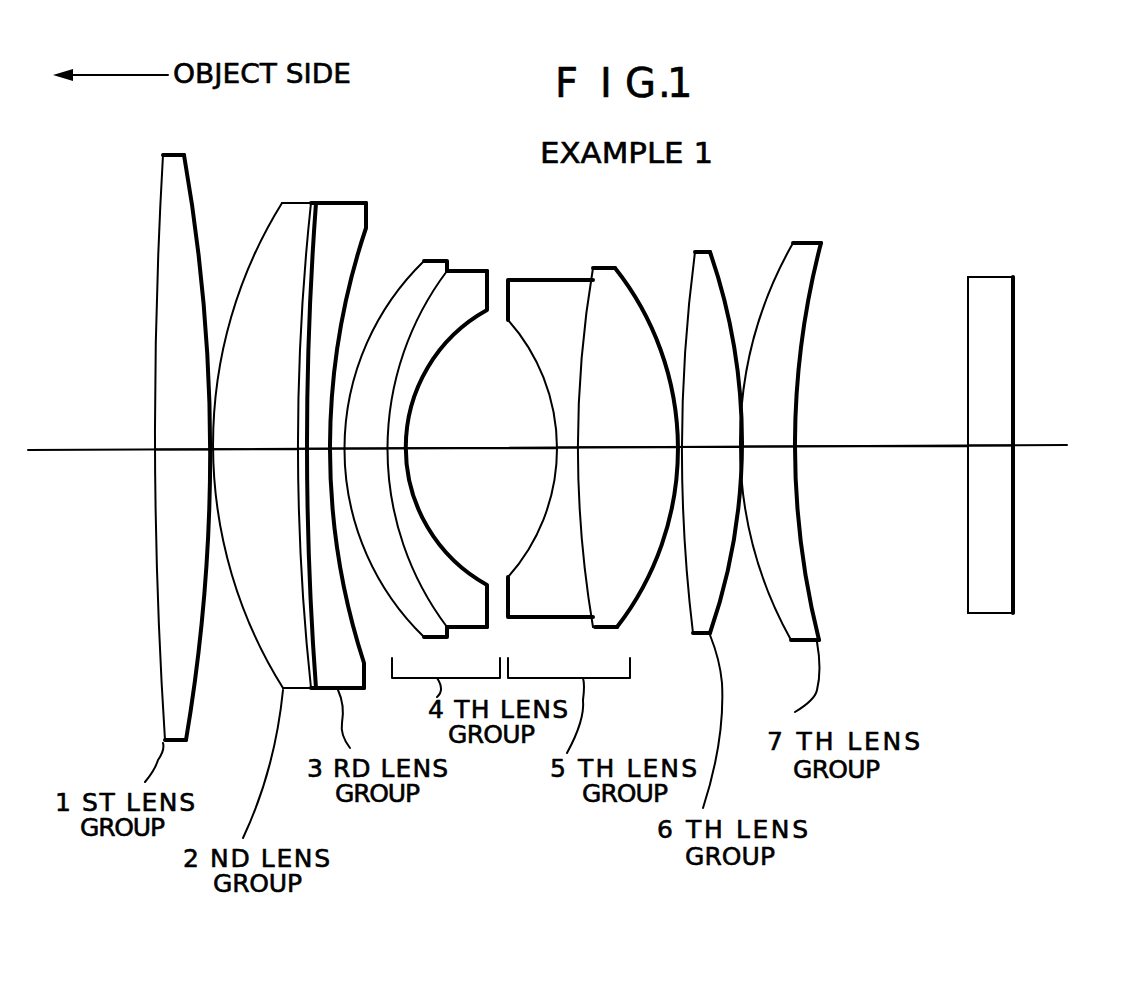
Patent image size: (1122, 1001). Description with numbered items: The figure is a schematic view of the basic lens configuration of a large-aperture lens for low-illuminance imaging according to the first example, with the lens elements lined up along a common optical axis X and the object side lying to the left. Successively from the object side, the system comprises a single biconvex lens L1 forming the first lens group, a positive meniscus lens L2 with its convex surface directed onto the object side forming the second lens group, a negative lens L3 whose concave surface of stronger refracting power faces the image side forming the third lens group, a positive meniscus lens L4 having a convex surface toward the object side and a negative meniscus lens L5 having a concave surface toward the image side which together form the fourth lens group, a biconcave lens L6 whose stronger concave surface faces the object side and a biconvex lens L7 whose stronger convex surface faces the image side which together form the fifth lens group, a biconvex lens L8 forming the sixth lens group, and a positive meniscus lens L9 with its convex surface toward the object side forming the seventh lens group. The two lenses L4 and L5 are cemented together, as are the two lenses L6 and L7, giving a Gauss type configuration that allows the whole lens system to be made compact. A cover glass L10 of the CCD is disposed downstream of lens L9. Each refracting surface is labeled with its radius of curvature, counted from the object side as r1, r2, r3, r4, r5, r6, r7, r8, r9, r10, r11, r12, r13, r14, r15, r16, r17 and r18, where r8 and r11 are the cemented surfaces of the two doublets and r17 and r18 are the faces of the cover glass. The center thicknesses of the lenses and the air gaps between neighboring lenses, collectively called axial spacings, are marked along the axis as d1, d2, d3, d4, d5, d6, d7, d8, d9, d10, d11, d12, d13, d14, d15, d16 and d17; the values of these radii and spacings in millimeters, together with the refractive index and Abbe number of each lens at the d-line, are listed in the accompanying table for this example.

The optical axis X is at (88, 454).
The biconvex lens L1 is at (167, 433).
The positive meniscus lens L2 is at (262, 443).
The negative lens L3 is at (326, 437).
The positive meniscus lens L4 is at (413, 430).
The negative meniscus lens L5 is at (456, 418).
The biconcave lens L6 is at (550, 435).
The biconvex lens L7 is at (635, 447).
The biconvex lens L8 is at (719, 440).
The positive meniscus lens L9 is at (810, 445).
The cover glass L10 is at (981, 420).
The lens surface radius of curvature r1 is at (162, 694).
The lens surface radius of curvature r2 is at (190, 718).
The lens surface radius of curvature r3 is at (262, 645).
The lens surface radius of curvature r4 is at (290, 692).
The lens surface radius of curvature r5 is at (298, 545).
The lens surface radius of curvature r6 is at (366, 648).
The lens surface radius of curvature r7 is at (395, 608).
The lens surface radius of curvature r8 is at (436, 612).
The lens surface radius of curvature r9 is at (430, 537).
The lens surface radius of curvature r10 is at (545, 525).
The lens surface radius of curvature r11 is at (577, 575).
The lens surface radius of curvature r12 is at (632, 612).
The lens surface radius of curvature r13 is at (690, 613).
The lens surface radius of curvature r14 is at (717, 613).
The lens surface radius of curvature r15 is at (783, 620).
The lens surface radius of curvature r16 is at (811, 602).
The lens surface radius of curvature r17 is at (962, 547).
The lens surface radius of curvature r18 is at (1006, 547).
The axial spacing d1 is at (168, 451).
The axial spacing d2 is at (208, 442).
The axial spacing d3 is at (257, 447).
The axial spacing d4 is at (300, 451).
The axial spacing d5 is at (300, 447).
The axial spacing d6 is at (342, 446).
The axial spacing d7 is at (366, 453).
The axial spacing d8 is at (403, 446).
The axial spacing d9 is at (457, 447).
The axial spacing d10 is at (567, 443).
The axial spacing d11 is at (620, 444).
The axial spacing d12 is at (699, 387).
The axial spacing d13 is at (702, 444).
The axial spacing d14 is at (742, 444).
The axial spacing d15 is at (774, 444).
The axial spacing d16 is at (858, 444).
The axial spacing d17 is at (982, 443).